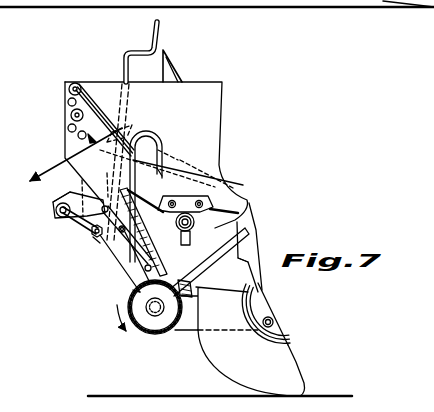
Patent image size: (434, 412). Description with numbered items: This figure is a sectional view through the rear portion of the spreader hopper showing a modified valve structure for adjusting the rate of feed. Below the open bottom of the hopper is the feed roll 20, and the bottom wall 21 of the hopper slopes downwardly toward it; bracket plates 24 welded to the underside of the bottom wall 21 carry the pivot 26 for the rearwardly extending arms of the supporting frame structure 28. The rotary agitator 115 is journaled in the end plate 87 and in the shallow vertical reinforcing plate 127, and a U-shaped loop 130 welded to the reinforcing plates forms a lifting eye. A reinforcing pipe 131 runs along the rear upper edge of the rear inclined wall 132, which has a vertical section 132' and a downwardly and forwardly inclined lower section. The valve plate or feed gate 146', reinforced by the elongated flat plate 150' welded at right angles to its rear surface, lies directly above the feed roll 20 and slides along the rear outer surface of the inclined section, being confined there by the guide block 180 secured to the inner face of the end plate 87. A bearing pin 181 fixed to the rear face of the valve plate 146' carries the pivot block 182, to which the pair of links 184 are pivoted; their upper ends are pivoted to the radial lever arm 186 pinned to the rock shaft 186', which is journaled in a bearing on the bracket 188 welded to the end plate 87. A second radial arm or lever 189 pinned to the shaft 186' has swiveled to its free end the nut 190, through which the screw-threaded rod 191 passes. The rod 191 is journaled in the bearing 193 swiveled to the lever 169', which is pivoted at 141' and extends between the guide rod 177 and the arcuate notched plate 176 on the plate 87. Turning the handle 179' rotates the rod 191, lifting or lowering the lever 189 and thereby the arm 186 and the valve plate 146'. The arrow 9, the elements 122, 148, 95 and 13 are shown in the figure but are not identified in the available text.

The handle 179' is at (162, 124).
The guide rod 177 is at (170, 62).
The arcuate plate 176 is at (178, 73).
The end plate 87 is at (220, 123).
The pipe 131 is at (70, 87).
The rear inclined wall 132 is at (105, 99).
The pivot 141' is at (56, 120).
The direction arrow 9 is at (76, 154).
The bearing 193 is at (118, 130).
The U-shaped loop 130 is at (150, 140).
The vertical section 132' is at (178, 146).
The lever 169' is at (166, 162).
The mounting plate 122 is at (188, 200).
The bearing 148 is at (138, 229).
The rotary agitator 115 is at (174, 240).
The radial lever arm 186 is at (80, 190).
The rock shaft 186' is at (35, 216).
The bracket 188 is at (57, 194).
The radial arm or lever 189 is at (78, 232).
The nut 190 is at (92, 232).
The screw-threaded rod 191 is at (96, 239).
The links 184 is at (97, 222).
The pivot block 182 is at (119, 235).
The bearing pin 181 is at (96, 240).
The guide block 180 is at (145, 265).
The elongated flat plate 150' is at (103, 267).
The valve plate or feed gate 146' is at (110, 310).
The feed roll 20 is at (153, 334).
The hub 95 is at (160, 316).
The middle reinforcing plate 127 is at (221, 232).
The bottom wall 21 is at (216, 308).
The bracket plates 24 is at (239, 256).
The supporting frame structure 28 is at (247, 256).
The pivot 26 is at (236, 291).
The shoe 13 is at (287, 368).